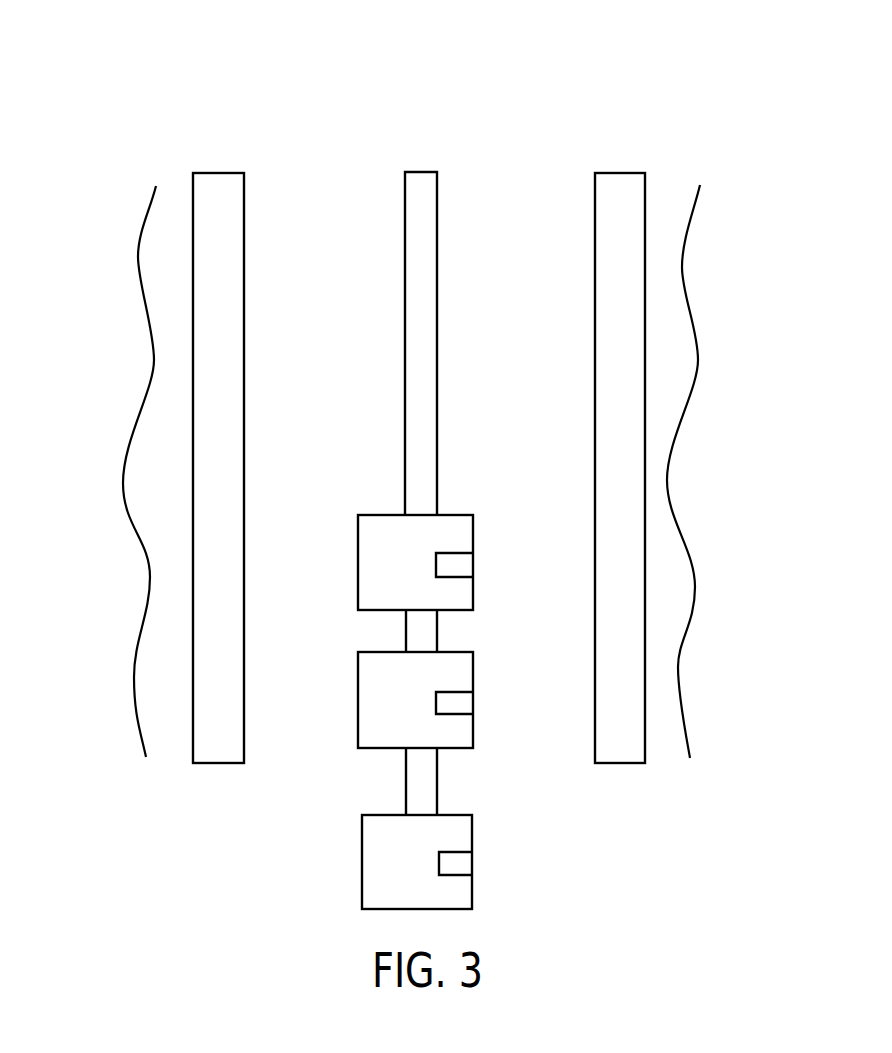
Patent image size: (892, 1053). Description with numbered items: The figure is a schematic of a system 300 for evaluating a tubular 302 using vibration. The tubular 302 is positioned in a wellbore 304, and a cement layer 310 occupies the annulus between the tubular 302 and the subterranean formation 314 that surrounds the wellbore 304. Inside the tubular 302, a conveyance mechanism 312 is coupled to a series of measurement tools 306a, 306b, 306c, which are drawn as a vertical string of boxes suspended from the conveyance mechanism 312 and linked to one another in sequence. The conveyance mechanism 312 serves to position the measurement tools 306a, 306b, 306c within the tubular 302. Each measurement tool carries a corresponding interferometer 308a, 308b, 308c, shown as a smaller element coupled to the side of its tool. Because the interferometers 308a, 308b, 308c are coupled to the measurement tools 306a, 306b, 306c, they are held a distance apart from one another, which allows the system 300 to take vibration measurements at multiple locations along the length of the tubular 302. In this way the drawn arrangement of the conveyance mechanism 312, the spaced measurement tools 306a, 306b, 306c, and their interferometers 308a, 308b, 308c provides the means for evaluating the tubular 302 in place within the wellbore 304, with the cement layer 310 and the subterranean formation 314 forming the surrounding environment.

The system 300 is at (108, 89).
The tubular 302 is at (620, 172).
The wellbore 304 is at (692, 318).
The measurement tool 306a is at (373, 560).
The measurement tool 306b is at (374, 693).
The measurement tool 306c is at (374, 856).
The interferometer 308a is at (462, 566).
The interferometer 308b is at (462, 703).
The interferometer 308c is at (462, 868).
The cement layer 310 is at (665, 675).
The conveyance mechanism 312 is at (420, 172).
The subterranean formation 314 is at (750, 485).